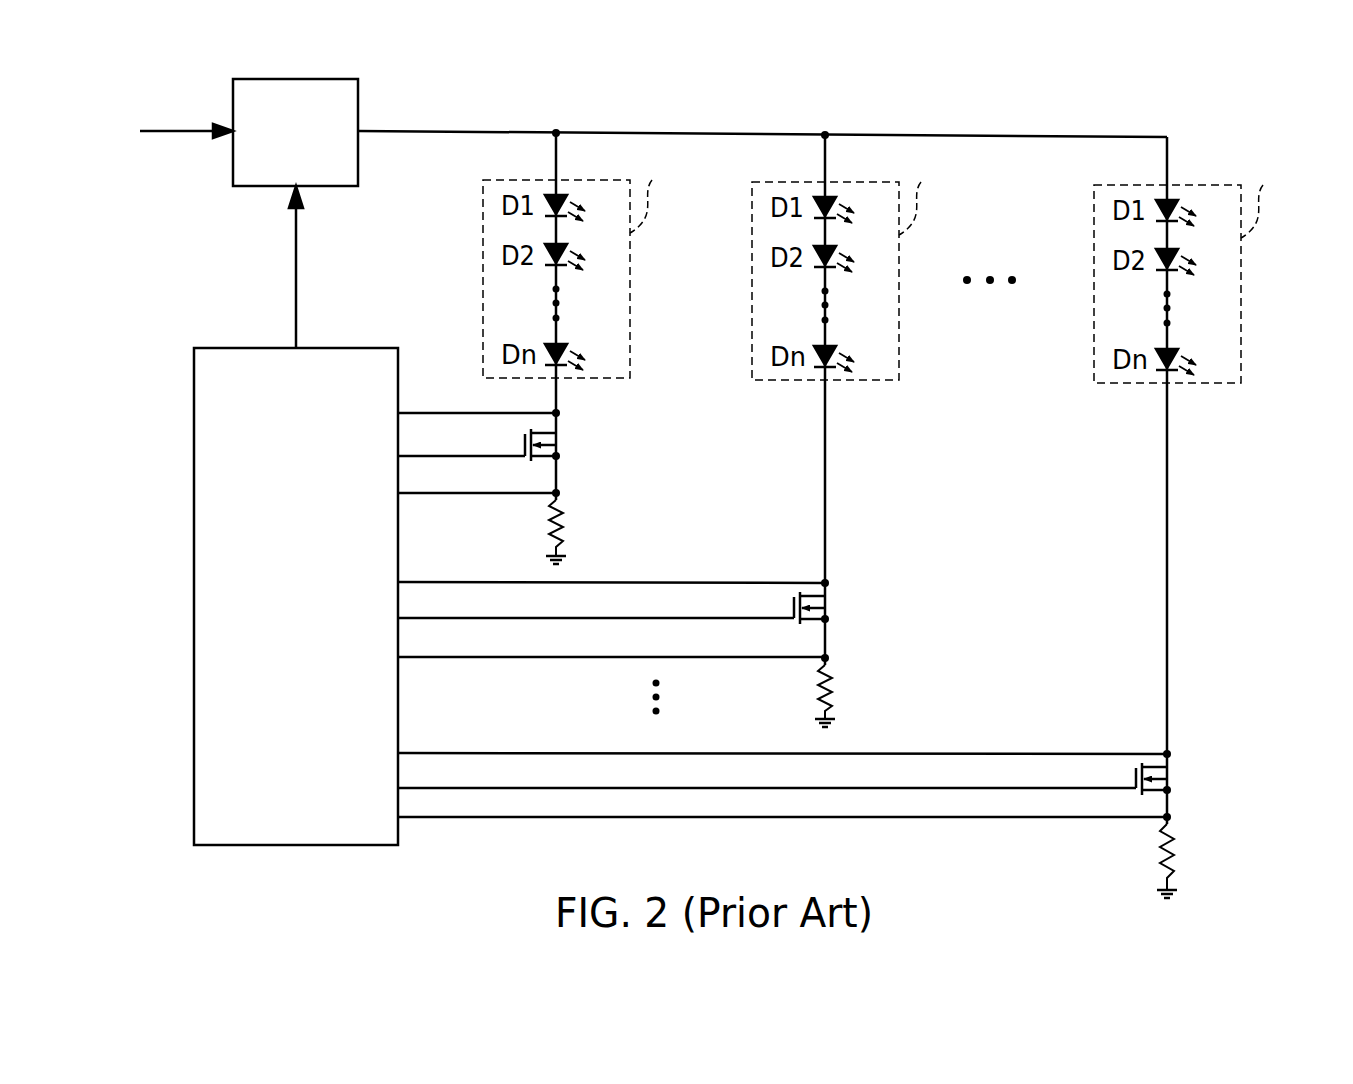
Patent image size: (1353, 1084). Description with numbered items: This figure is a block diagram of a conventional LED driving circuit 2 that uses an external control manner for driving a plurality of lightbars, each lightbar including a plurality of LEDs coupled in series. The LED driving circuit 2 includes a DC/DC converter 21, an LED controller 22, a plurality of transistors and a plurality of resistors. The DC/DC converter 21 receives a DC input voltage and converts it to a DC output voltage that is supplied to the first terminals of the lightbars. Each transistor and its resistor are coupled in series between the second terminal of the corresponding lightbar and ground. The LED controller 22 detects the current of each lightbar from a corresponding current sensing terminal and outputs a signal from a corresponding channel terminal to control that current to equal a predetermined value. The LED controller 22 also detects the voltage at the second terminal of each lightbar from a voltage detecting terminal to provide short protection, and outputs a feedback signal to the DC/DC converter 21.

The LED driving circuit 2 is at (165, 864).
The DC/DC converter 21 is at (233, 173).
The LED controller 22 is at (193, 597).